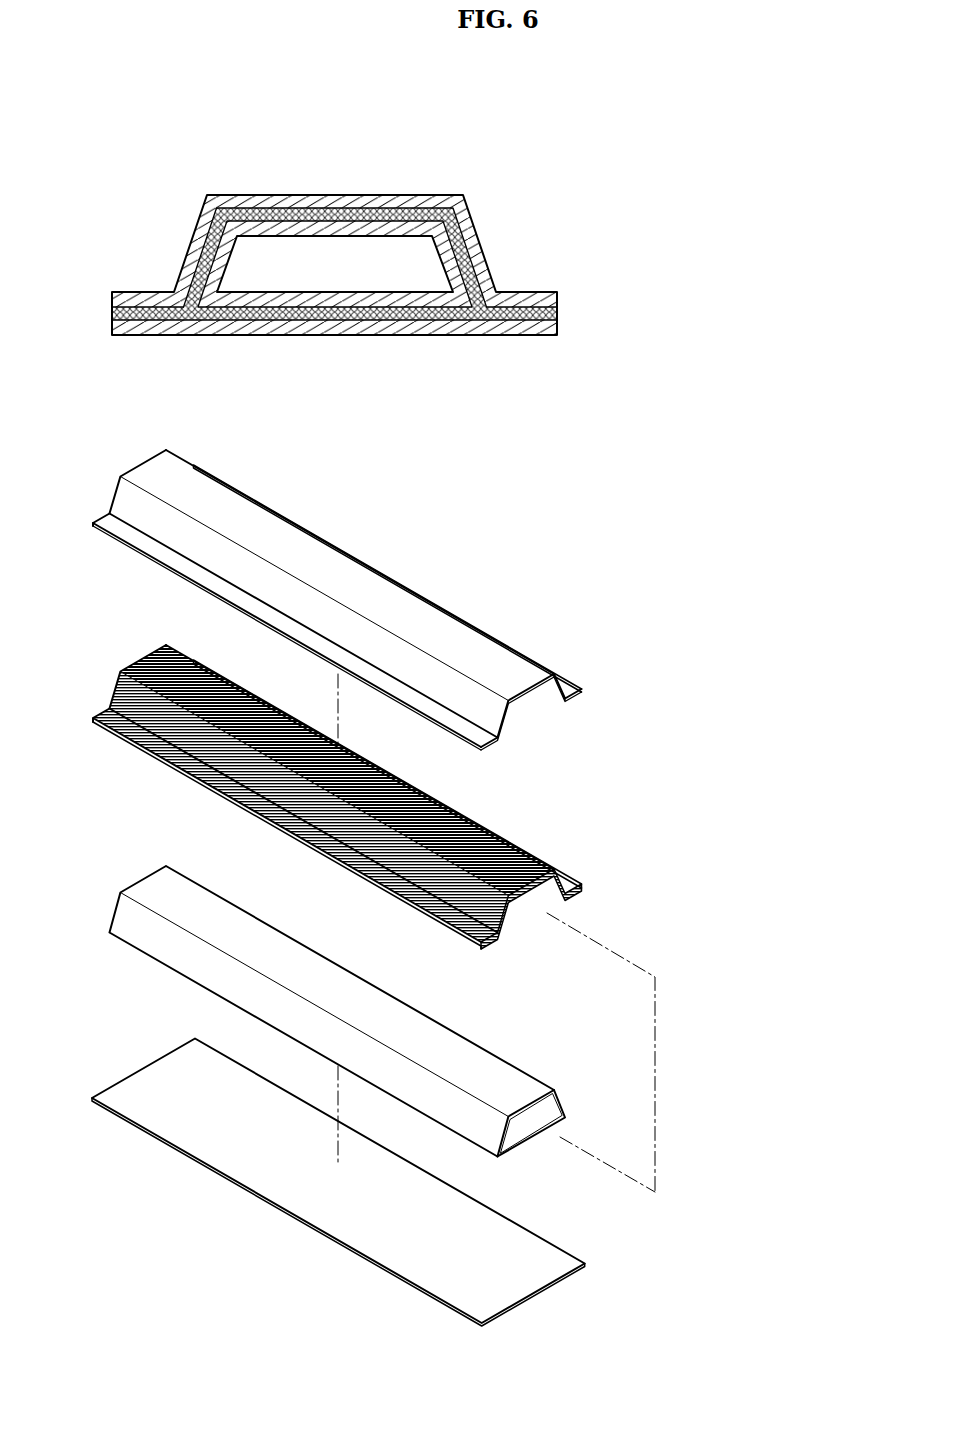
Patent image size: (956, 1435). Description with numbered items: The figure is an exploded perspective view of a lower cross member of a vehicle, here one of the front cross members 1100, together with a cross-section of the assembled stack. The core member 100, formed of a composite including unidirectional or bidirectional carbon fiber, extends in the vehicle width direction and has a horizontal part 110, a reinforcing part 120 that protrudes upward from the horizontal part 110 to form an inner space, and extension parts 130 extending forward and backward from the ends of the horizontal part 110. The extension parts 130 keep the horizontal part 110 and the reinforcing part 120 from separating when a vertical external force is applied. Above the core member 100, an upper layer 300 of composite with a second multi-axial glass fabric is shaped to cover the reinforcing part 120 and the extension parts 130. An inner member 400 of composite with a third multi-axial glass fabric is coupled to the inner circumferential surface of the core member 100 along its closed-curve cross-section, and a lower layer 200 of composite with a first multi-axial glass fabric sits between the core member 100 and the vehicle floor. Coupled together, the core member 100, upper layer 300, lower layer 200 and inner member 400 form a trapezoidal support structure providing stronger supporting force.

The front cross member 1100 is at (484, 180).
The upper layer 300 is at (393, 201).
The core member 100 is at (348, 610).
The horizontal part 110 is at (523, 918).
The reinforcing part 120 is at (487, 842).
The extension parts 130 is at (573, 877).
The inner member 400 is at (318, 302).
The lower layer 200 is at (467, 328).